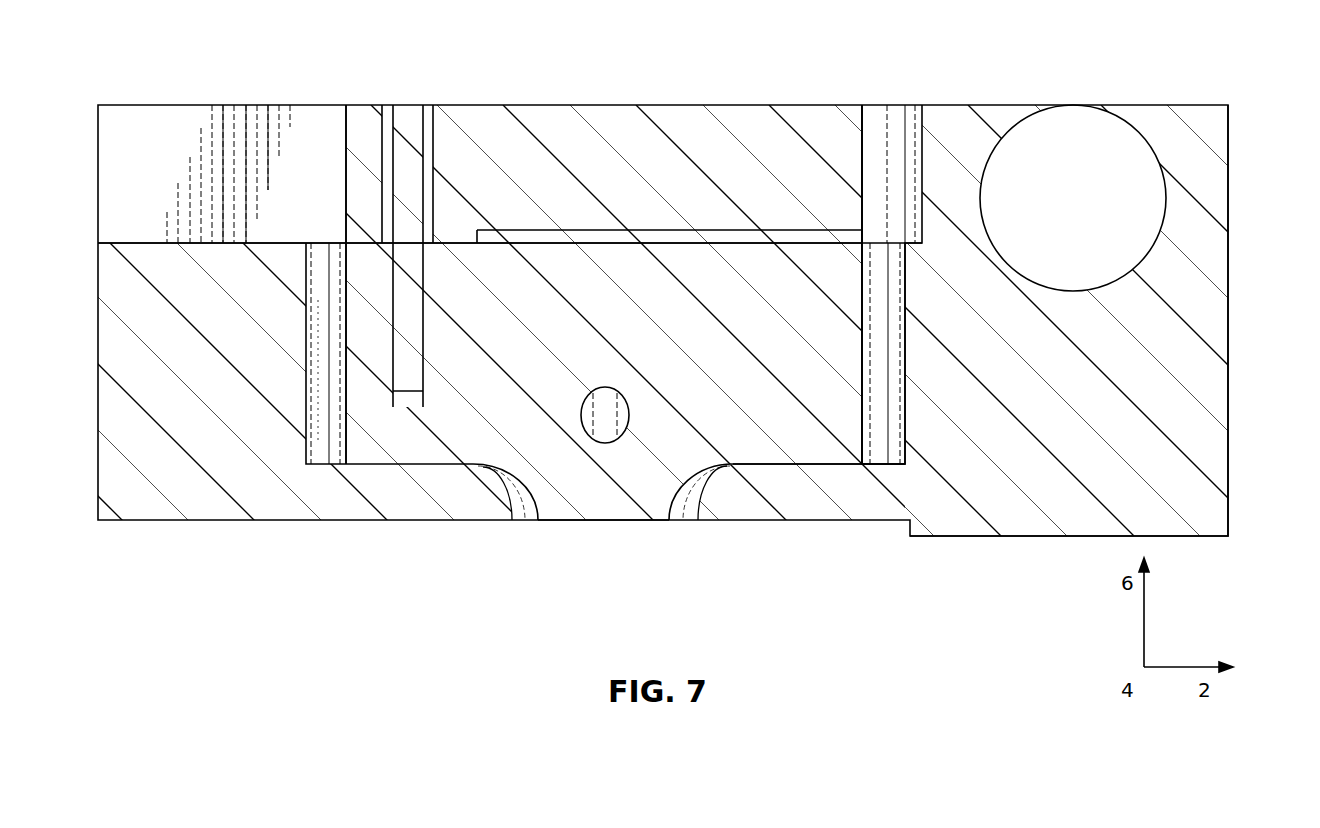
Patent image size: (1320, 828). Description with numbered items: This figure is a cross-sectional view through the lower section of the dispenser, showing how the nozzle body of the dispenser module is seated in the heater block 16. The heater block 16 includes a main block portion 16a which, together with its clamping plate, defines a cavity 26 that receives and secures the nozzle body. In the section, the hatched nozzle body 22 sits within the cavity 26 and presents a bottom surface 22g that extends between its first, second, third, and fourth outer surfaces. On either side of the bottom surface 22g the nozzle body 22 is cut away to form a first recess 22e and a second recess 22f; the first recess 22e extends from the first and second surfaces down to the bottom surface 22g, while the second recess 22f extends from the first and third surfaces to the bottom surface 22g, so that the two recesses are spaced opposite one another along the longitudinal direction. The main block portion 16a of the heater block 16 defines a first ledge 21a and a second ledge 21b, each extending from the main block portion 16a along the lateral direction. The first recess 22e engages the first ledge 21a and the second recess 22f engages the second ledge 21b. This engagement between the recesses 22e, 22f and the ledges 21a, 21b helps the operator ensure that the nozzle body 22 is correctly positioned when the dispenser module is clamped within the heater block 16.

The heater block 16 is at (1205, 378).
The main block portion 16a is at (1202, 135).
The valve body 22 is at (635, 135).
The first ledge 21a is at (362, 493).
The second ledge 21b is at (775, 497).
The cavity 26 is at (327, 450).
The first recess 22e is at (440, 465).
The second recess 22f is at (828, 466).
The bottom surface 22g is at (630, 522).